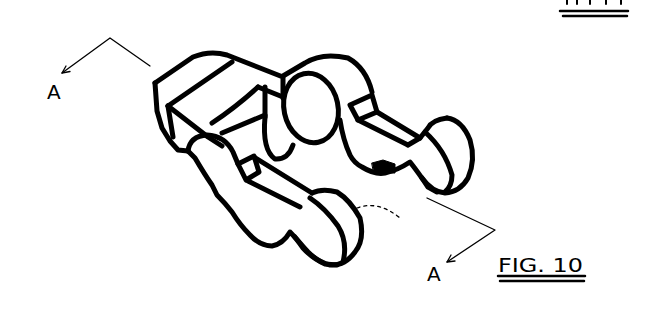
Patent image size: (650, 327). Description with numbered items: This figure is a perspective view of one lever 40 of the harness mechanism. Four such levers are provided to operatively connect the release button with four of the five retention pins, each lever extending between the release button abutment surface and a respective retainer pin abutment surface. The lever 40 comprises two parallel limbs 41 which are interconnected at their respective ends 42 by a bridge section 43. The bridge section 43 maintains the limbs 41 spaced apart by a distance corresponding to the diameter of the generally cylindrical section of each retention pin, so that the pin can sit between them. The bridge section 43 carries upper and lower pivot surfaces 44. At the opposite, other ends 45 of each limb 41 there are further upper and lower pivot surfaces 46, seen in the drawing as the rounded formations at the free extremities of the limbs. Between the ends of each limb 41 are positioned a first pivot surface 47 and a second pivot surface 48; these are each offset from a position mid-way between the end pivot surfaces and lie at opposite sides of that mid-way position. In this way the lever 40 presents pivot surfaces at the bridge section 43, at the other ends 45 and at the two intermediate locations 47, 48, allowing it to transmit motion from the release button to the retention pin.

The lever 40 is at (203, 237).
The limb 41 is at (390, 100).
The end 42 is at (337, 73).
The bridge section 43 is at (242, 86).
The pivot surface 44 is at (185, 87).
The other end 45 is at (438, 114).
The pivot surface 46 is at (447, 135).
The first pivot surface 47 is at (268, 235).
The second pivot surface 48 is at (173, 170).